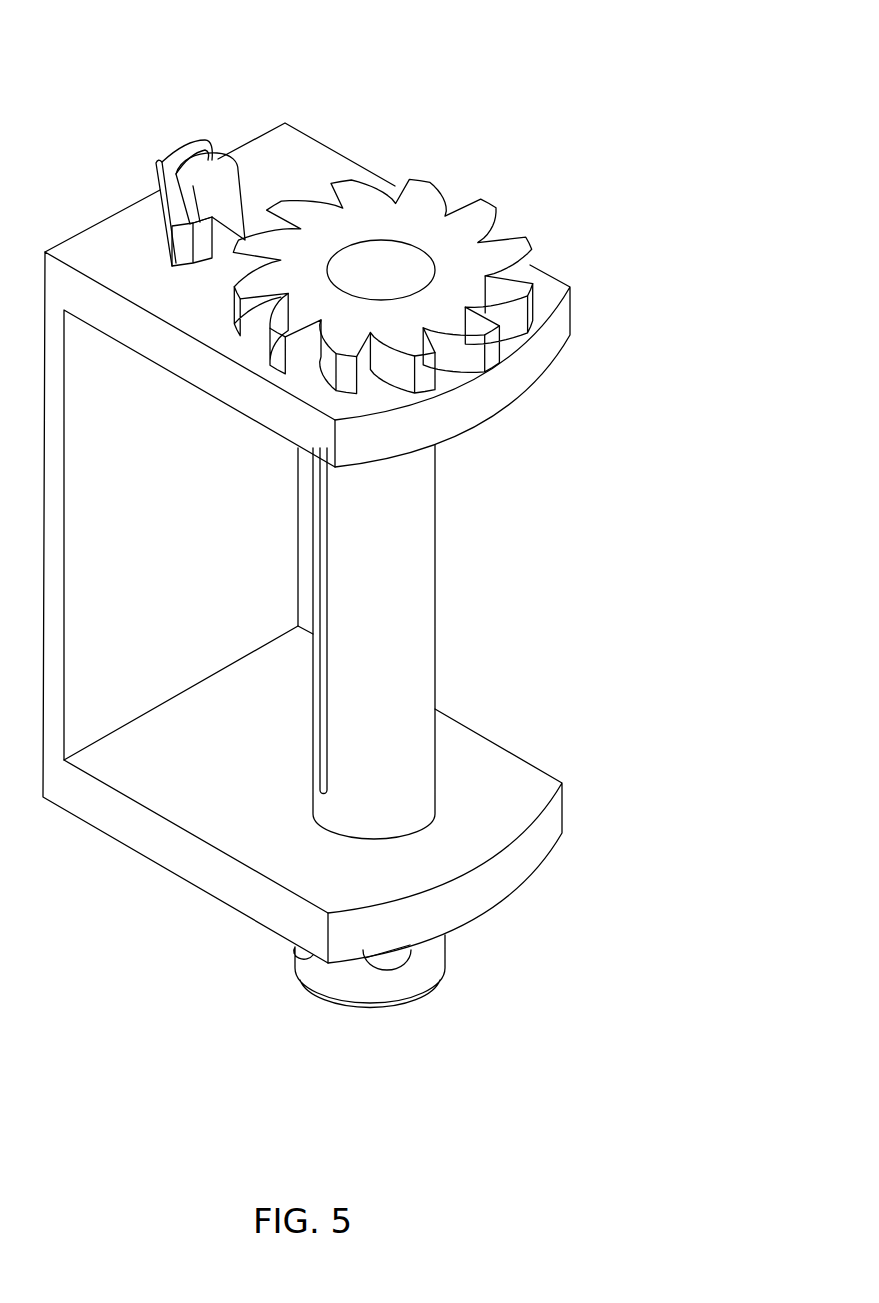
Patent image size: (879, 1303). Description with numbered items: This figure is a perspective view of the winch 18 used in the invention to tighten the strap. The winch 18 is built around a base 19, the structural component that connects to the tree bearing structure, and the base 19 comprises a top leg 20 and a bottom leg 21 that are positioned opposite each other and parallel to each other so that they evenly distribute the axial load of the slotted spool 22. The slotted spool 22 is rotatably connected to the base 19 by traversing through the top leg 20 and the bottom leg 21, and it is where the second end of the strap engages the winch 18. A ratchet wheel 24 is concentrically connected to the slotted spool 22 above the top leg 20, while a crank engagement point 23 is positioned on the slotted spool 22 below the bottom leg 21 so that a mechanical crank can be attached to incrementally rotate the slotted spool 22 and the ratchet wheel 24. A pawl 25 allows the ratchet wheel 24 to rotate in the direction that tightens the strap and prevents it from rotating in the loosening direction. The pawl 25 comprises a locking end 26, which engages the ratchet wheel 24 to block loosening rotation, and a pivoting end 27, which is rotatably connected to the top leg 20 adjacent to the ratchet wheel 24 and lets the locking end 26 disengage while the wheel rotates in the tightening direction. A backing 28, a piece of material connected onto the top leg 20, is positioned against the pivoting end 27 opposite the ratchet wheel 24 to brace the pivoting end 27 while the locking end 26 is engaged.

The winch 18 is at (441, 81).
The base 19 is at (198, 546).
The top leg 20 is at (545, 350).
The bottom leg 21 is at (505, 771).
The slotted spool 22 is at (414, 633).
The crank engagement point 23 is at (393, 977).
The ratchet wheel 24 is at (470, 216).
The pawl 25 is at (253, 195).
The locking end 26 is at (220, 250).
The pivoting end 27 is at (193, 168).
The backing 28 is at (157, 163).